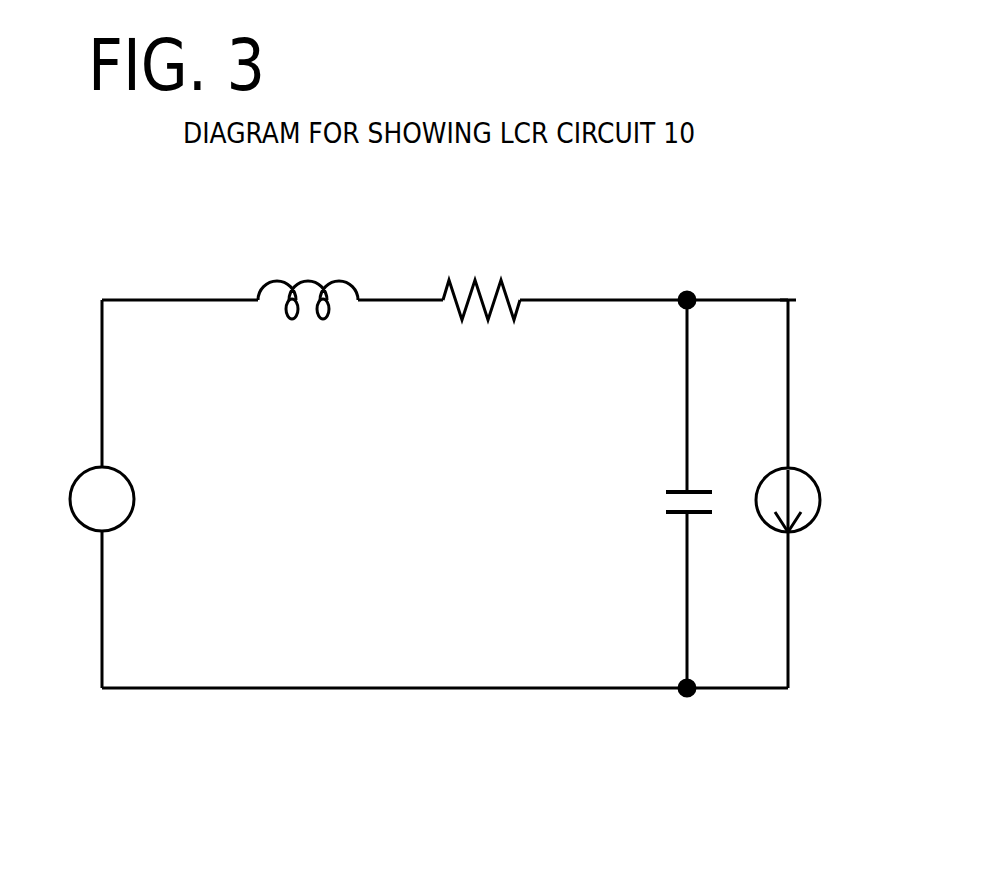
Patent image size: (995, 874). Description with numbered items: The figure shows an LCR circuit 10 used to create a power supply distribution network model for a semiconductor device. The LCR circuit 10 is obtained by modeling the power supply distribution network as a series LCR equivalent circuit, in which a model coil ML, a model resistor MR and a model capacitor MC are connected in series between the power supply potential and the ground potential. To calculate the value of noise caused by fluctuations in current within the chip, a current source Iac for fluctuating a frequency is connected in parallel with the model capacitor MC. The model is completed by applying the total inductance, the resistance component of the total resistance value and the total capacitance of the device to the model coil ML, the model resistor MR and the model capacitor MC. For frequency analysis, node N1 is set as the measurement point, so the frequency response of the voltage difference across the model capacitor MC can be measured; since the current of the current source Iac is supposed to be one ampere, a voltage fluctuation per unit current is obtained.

The LCR circuit 10 is at (754, 242).
The model coil ML is at (308, 278).
The model resistor MR is at (481, 279).
The model capacitor MC is at (656, 494).
The node N1 is at (788, 300).
The current source Iac is at (812, 502).